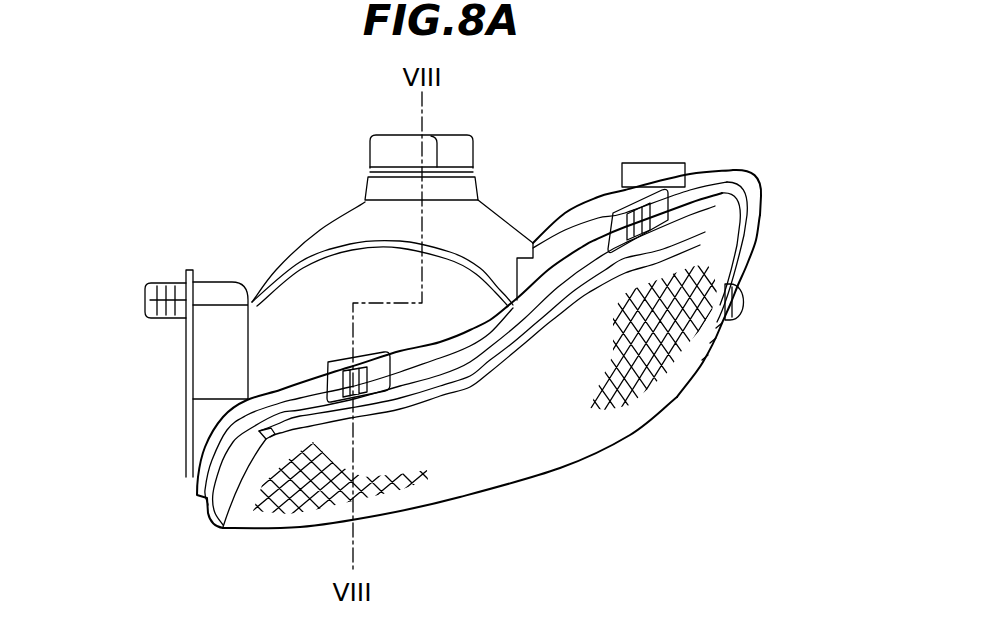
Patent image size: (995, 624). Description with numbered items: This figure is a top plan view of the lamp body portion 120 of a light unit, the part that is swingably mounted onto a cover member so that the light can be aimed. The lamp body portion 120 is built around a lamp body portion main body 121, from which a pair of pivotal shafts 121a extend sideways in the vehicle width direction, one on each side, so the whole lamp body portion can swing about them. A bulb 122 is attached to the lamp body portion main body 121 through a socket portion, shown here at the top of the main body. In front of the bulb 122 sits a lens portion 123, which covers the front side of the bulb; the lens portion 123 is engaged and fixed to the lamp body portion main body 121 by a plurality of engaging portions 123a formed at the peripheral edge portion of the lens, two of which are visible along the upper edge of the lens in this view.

The lamp body portion 120 is at (677, 397).
The lamp body portion main body 121 is at (457, 295).
The pivotal shaft 121a is at (145, 297).
The bulb 122 is at (462, 190).
The lens portion 123 is at (508, 445).
The engaging portion 123a is at (337, 360).